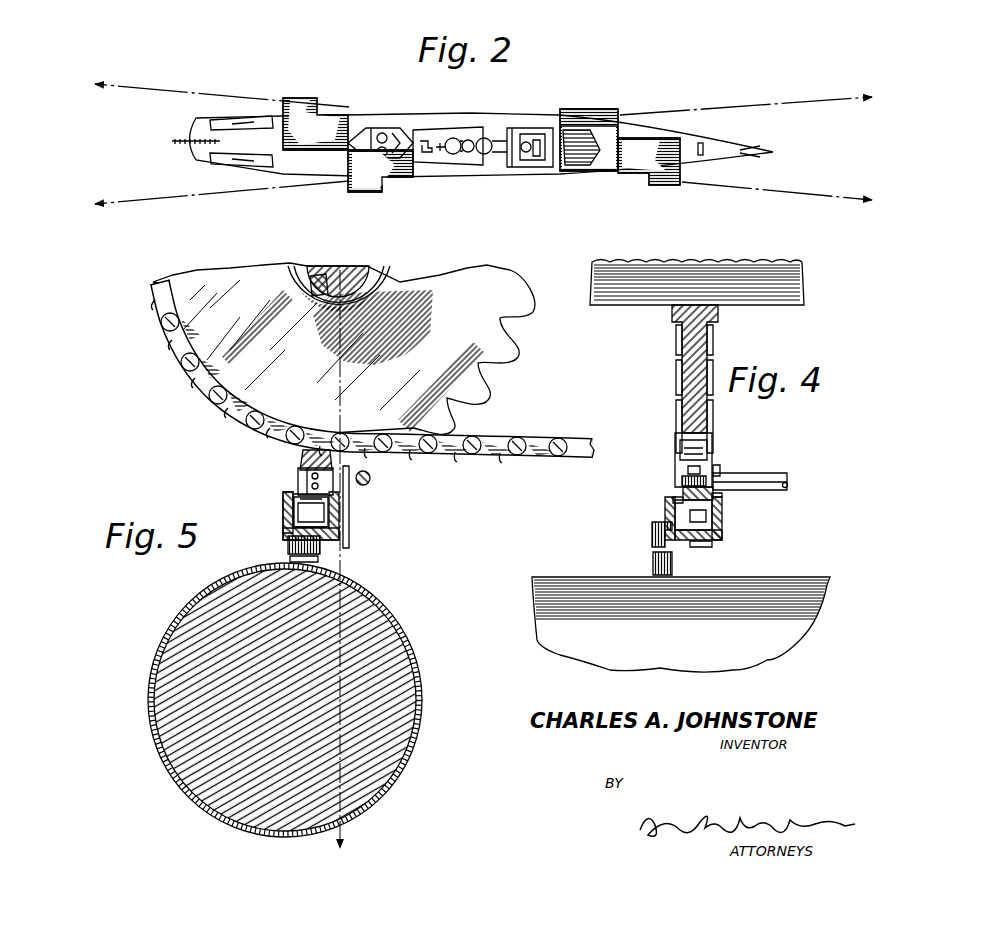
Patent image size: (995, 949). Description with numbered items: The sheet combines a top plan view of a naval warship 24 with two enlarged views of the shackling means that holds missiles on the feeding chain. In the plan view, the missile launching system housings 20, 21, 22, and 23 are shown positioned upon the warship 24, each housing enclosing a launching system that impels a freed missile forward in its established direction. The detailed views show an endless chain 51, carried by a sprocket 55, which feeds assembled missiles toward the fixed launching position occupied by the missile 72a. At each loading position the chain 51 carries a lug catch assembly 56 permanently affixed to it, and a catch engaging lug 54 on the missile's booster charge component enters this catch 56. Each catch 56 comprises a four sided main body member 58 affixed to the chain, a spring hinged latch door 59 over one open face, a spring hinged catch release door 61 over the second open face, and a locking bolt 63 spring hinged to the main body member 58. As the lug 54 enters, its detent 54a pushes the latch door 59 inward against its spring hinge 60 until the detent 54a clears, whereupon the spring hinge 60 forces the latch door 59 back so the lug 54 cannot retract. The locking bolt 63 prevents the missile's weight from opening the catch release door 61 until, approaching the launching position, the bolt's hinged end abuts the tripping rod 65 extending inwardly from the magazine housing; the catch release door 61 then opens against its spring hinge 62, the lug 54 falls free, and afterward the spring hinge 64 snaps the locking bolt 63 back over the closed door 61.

In FIG. 2, the missile launching system housing 20 is at (318, 122).
In FIG. 2, the missile launching system housing 21 is at (403, 168).
In FIG. 2, the missile launching system housing 22 is at (598, 120).
In FIG. 2, the missile launching system housing 23 is at (661, 184).
In FIG. 2, the naval warship 24 is at (420, 130).
In FIG. 5, the endless chain 51 is at (172, 352).
In FIG. 4, the endless chain 51 is at (680, 360).
In FIG. 5, the catch engaging lug 54 is at (322, 548).
In FIG. 4, the catch engaging lug 54 is at (654, 560).
In FIG. 5, the detent 54a is at (284, 519).
In FIG. 4, the detent 54a is at (663, 524).
In FIG. 5, the sprocket 55 is at (470, 298).
In FIG. 4, the sprocket 55 is at (668, 310).
In FIG. 5, the lug catch assembly 56 is at (334, 508).
In FIG. 4, the lug catch assembly 56 is at (669, 525).
In FIG. 5, the main body member 58 is at (282, 509).
In FIG. 4, the main body member 58 is at (723, 511).
In FIG. 4, the latch door 59 is at (664, 500).
In FIG. 5, the spring hinge 60 is at (298, 485).
In FIG. 4, the spring hinge 60 is at (677, 495).
In FIG. 5, the catch release door 61 is at (288, 532).
In FIG. 4, the catch release door 61 is at (700, 546).
In FIG. 4, the spring hinge 62 is at (722, 535).
In FIG. 5, the locking bolt 63 is at (350, 521).
In FIG. 4, the locking bolt 63 is at (720, 470).
In FIG. 5, the spring hinge 64 is at (340, 494).
In FIG. 4, the spring hinge 64 is at (722, 496).
In FIG. 5, the tripping rod 65 is at (372, 476).
In FIG. 4, the tripping rod 65 is at (770, 474).
In FIG. 5, the missile 72a is at (424, 704).
In FIG. 4, the missile 72a is at (630, 623).